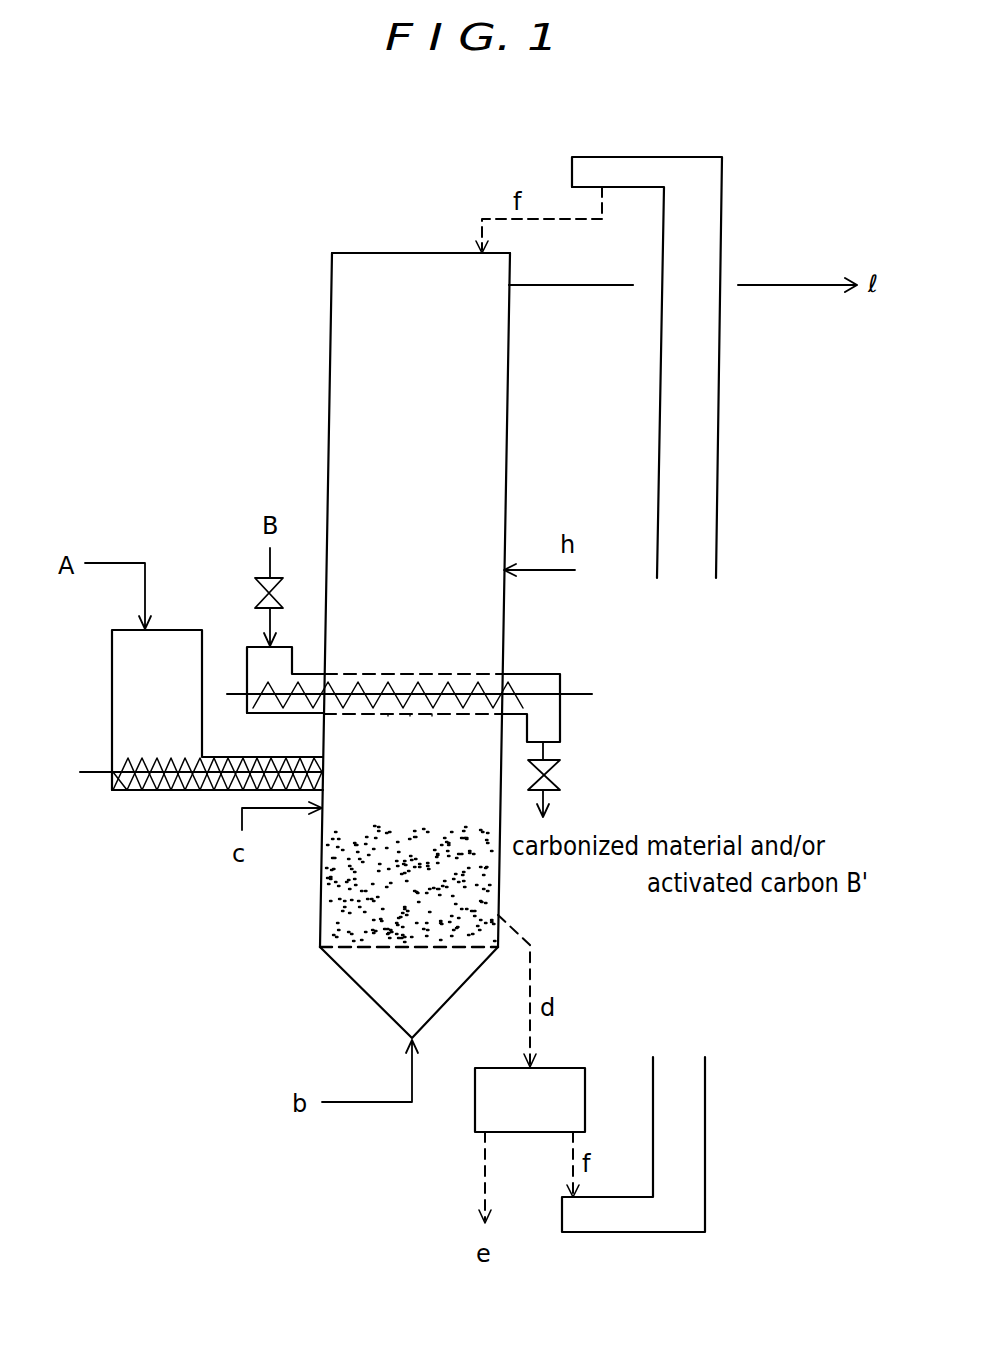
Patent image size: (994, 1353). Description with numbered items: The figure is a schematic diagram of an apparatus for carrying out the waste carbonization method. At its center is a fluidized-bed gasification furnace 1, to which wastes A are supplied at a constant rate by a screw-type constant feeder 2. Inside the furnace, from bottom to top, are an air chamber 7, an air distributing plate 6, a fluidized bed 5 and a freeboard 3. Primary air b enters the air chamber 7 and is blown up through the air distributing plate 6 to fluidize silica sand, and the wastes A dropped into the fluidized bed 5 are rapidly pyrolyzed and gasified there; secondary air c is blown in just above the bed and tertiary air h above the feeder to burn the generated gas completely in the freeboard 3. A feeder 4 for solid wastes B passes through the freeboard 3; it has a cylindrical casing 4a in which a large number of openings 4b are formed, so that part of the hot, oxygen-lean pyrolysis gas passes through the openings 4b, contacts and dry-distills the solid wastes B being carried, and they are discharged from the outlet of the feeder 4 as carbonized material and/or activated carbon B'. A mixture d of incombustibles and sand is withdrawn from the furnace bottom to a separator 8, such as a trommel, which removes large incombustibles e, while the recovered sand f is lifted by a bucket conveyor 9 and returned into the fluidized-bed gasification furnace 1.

The fluidized-bed gasification furnace 1 is at (329, 379).
The constant feeder 2 is at (112, 686).
The freeboard 3 is at (413, 310).
The feeder 4 is at (418, 708).
The casing 4a is at (400, 674).
The openings 4b is at (388, 716).
The fluidized bed 5 is at (486, 874).
The air distributing plate 6 is at (470, 950).
The air chamber 7 is at (365, 982).
The separator 8 is at (475, 1115).
The bucket conveyor 9 is at (705, 1136).